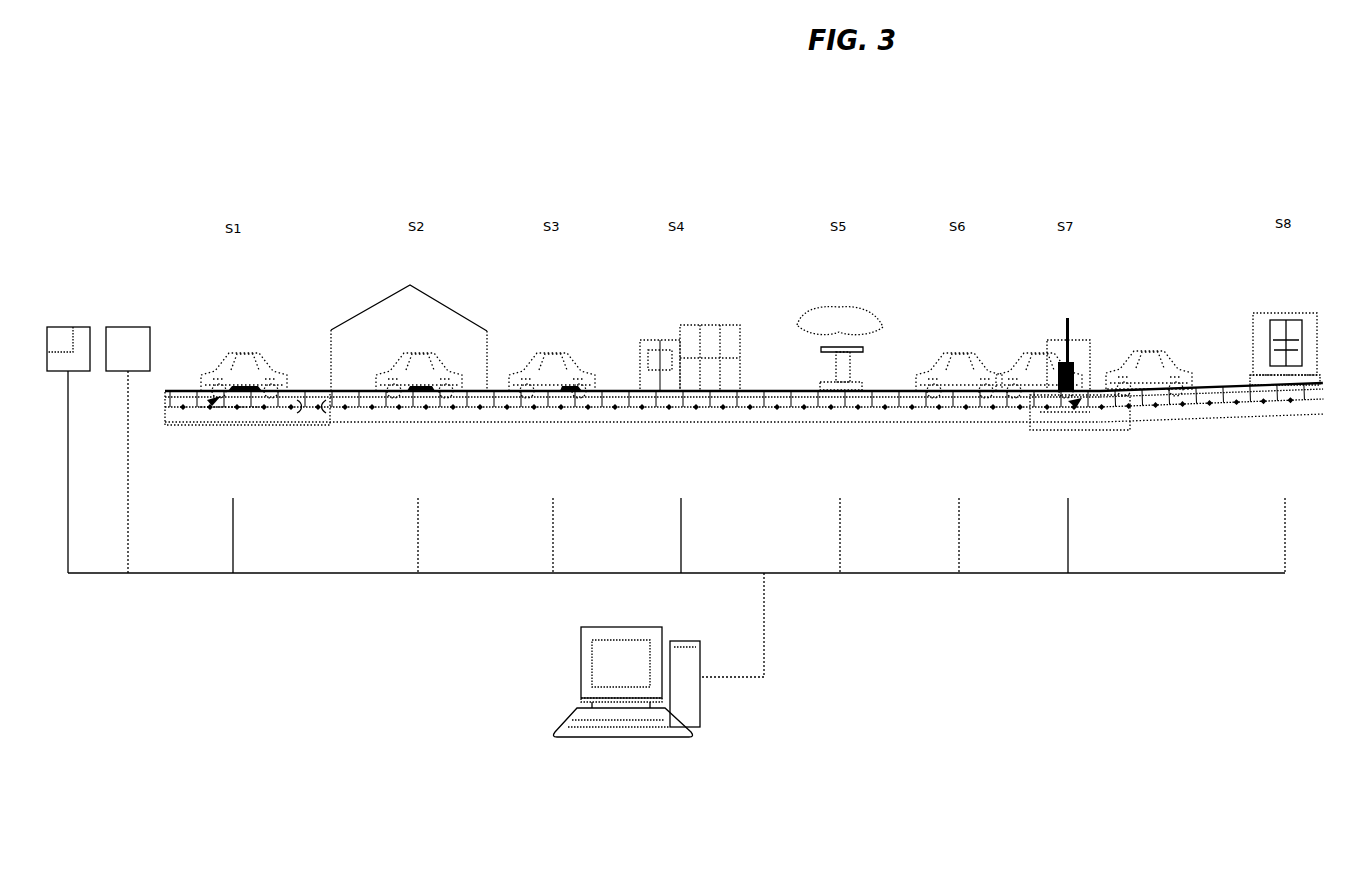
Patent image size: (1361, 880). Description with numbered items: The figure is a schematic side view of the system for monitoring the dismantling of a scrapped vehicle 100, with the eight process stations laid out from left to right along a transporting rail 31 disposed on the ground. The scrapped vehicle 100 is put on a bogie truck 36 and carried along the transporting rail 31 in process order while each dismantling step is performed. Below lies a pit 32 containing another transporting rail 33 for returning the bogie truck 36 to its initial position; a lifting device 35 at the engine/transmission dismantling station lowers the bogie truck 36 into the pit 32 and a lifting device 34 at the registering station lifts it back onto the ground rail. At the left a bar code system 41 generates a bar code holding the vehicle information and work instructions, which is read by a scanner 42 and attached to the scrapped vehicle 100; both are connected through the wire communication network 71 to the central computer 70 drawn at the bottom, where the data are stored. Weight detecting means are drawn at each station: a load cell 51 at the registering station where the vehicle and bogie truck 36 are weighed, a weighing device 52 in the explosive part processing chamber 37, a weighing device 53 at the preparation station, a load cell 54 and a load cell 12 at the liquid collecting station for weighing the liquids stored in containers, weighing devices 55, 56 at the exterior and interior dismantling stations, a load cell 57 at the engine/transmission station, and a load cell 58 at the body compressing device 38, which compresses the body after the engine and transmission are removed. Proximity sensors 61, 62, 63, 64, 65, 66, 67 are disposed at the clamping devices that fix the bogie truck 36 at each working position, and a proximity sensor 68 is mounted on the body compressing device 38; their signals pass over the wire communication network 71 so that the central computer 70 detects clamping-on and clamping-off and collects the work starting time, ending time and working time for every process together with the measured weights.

The load cell 12 is at (687, 277).
The transporting rail 31 is at (305, 390).
The pit 32 is at (323, 403).
The transporting rail 33 is at (300, 403).
The lifting device 34 is at (212, 404).
The lifting device 35 is at (1074, 402).
The bogie truck 36 is at (236, 388).
The explosive part processing chamber 37 is at (360, 312).
The body compressing device 38 is at (1247, 324).
The bar code system 41 is at (80, 327).
The scanner 42 is at (143, 327).
The load cell 51 is at (246, 278).
The weighing device 52 is at (416, 291).
The weighing device 53 is at (416, 316).
The load cell 54 is at (686, 267).
The weighing device 55 is at (844, 310).
The weighing device 56 is at (855, 277).
The load cell 57 is at (1080, 273).
The load cell 58 is at (1276, 273).
The proximity sensor 61 is at (246, 498).
The proximity sensor 62 is at (400, 498).
The proximity sensor 63 is at (535, 498).
The proximity sensor 64 is at (660, 498).
The proximity sensor 65 is at (822, 498).
The proximity sensor 66 is at (942, 498).
The proximity sensor 67 is at (1052, 498).
The proximity sensor 68 is at (1267, 498).
The central computer 70 is at (572, 684).
The wire communication network 71 is at (740, 575).
The scrapped vehicle 100 is at (243, 354).